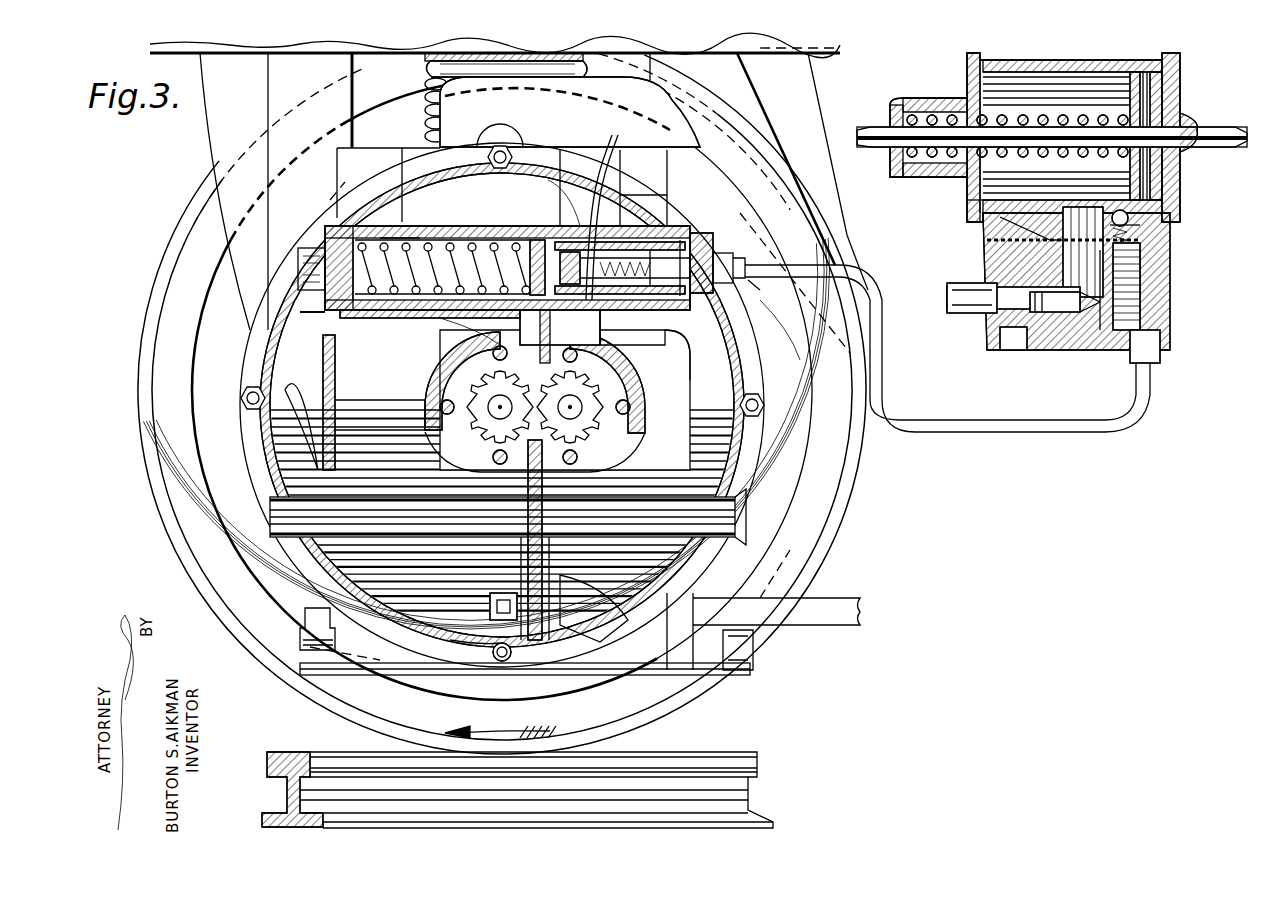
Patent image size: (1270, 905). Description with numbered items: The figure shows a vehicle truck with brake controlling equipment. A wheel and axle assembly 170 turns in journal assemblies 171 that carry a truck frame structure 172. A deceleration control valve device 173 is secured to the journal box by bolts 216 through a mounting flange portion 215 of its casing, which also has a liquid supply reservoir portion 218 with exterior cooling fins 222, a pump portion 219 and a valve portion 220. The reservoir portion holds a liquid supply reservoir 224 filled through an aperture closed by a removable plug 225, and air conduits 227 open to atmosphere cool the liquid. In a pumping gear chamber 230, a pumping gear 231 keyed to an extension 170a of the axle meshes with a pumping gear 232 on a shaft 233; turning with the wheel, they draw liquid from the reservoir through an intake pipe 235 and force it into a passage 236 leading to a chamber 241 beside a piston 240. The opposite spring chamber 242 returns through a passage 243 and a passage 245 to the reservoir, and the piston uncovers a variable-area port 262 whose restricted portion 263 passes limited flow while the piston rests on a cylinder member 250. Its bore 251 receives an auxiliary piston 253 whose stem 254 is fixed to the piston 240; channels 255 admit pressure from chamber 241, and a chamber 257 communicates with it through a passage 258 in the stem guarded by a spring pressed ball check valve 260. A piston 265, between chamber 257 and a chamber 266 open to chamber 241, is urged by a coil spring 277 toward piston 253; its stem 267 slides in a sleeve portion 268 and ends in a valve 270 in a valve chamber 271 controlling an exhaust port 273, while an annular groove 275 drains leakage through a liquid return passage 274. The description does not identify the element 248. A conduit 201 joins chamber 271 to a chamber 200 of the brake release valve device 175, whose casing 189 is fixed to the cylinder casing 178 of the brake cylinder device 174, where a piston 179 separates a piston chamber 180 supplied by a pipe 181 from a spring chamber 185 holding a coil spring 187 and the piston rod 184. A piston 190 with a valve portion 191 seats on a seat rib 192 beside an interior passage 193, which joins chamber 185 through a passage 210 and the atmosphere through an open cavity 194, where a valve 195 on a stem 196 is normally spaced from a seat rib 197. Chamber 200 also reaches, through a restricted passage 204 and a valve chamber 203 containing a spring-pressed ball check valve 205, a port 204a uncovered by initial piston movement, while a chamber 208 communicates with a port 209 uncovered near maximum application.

The wheel and axle assembly 170 is at (815, 542).
The axle extension 170a is at (420, 398).
The journal assemblies 171 is at (340, 160).
The truck frame structure 172 is at (228, 143).
The deceleration control valve device 173 is at (324, 316).
The brake cylinder device 174 is at (1194, 201).
The brake release valve device 175 is at (1138, 265).
The cylinder casing 178 is at (1175, 75).
The piston 179 is at (1150, 72).
The piston chamber 180 is at (1178, 88).
The pipe 181 is at (1210, 128).
The piston rod 184 is at (875, 130).
The spring chamber 185 is at (975, 205).
The coil spring 187 is at (985, 125).
The casing 189 is at (1140, 240).
The piston 190 is at (1115, 345).
The valve portion 191 is at (1080, 332).
The seat rib 192 is at (1055, 315).
The interior passage 193 is at (1030, 325).
The open cavity 194 is at (1000, 337).
The valve 195 is at (987, 280).
The stem 196 is at (987, 255).
The seat rib 197 is at (1000, 347).
The chamber 200 is at (1120, 315).
The conduit 201 is at (1000, 425).
The valve chamber 203 is at (1145, 232).
The restricted passage 204 is at (1150, 265).
The port 204a is at (1190, 185).
The spring-pressed ball check valve 205 is at (1122, 152).
The chamber 208 is at (1080, 212).
The port 209 is at (1020, 145).
The passage 210 is at (985, 223).
The mounting flange portion 215 is at (752, 452).
The bolts 216 is at (510, 152).
The liquid supply reservoir portion 218 is at (285, 470).
The pump portion 219 is at (606, 400).
The valve portion 220 is at (440, 200).
The exterior cooling fins 222 is at (300, 430).
The liquid supply reservoir 224 is at (577, 600).
The removable plug 225 is at (494, 660).
The air conduits 227 is at (793, 448).
The pumping gear chamber 230 is at (430, 365).
The pumping gear 231 is at (330, 375).
The pumping gear 232 is at (600, 362).
The shaft 233 is at (632, 412).
The intake pipe 235 is at (530, 660).
The passage 236 is at (693, 345).
The piston 240 is at (545, 235).
The chamber 241 is at (645, 243).
The spring chamber 242 is at (330, 176).
The passage 243 is at (400, 318).
The passage 245 is at (440, 372).
The cylinder wall 248 is at (395, 240).
The cylinder member 250 is at (632, 200).
The bore 251 is at (562, 195).
The auxiliary piston 253 is at (560, 205).
The stem 254 is at (500, 230).
The channels 255 is at (442, 267).
The chamber 257 is at (600, 175).
The passage 258 is at (560, 334).
The spring pressed ball check valve 260 is at (613, 145).
The port 262 is at (500, 314).
The restricted portion 263 is at (519, 407).
The piston 265 is at (580, 250).
The chamber 266 is at (715, 258).
The stem 267 is at (790, 320).
The sleeve portion 268 is at (752, 322).
The valve 270 is at (735, 268).
The valve chamber 271 is at (760, 276).
The exhaust port 273 is at (695, 238).
The liquid return passage 274 is at (700, 352).
The annular groove 275 is at (765, 298).
The coil spring 277 is at (630, 312).